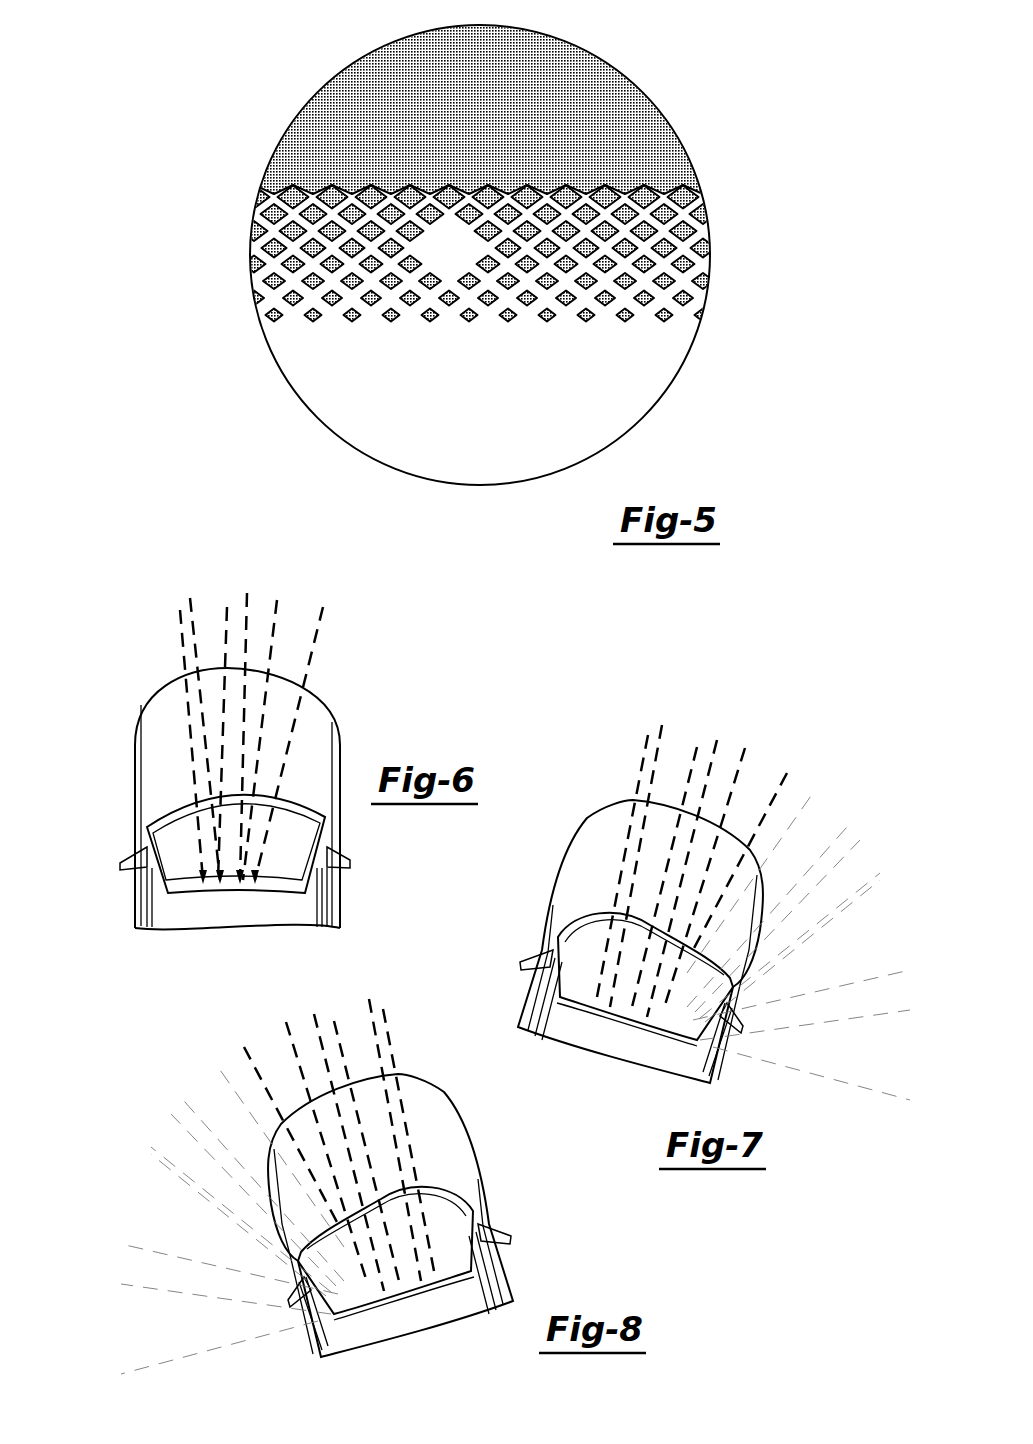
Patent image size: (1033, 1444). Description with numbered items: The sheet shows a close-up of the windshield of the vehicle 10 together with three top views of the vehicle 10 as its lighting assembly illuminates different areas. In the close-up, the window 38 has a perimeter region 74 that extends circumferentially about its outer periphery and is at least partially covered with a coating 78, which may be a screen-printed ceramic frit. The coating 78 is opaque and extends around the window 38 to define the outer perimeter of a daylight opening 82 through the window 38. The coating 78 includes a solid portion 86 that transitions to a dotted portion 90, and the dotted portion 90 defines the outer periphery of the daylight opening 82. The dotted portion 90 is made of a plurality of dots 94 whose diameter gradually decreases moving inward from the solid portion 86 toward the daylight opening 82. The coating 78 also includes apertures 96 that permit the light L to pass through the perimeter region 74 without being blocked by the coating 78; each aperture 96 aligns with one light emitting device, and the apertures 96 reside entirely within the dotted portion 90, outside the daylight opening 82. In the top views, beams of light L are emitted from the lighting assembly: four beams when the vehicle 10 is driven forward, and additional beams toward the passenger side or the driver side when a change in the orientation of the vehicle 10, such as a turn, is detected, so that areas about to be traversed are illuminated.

In FIG. 6, the vehicle 10 is at (325, 697).
In FIG. 7, the vehicle 10 is at (612, 805).
In FIG. 8, the vehicle 10 is at (420, 1080).
In FIG. 5, the window 38 is at (482, 453).
In FIG. 5, the perimeter region 74 is at (766, 174).
In FIG. 5, the coating 78 is at (688, 358).
In FIG. 5, the daylight opening 82 is at (197, 402).
In FIG. 5, the solid portion 86 is at (466, 97).
In FIG. 5, the dotted portion 90 is at (445, 253).
In FIG. 5, the dots 94 is at (604, 307).
In FIG. 5, the apertures 96 is at (443, 262).
In FIG. 6, the light L is at (207, 625).